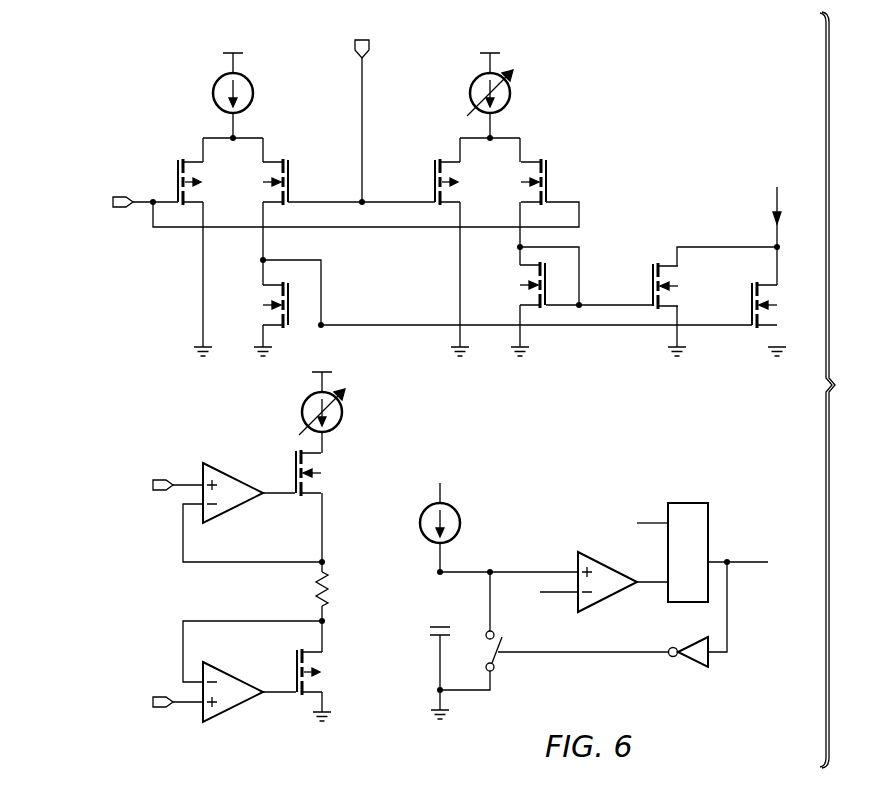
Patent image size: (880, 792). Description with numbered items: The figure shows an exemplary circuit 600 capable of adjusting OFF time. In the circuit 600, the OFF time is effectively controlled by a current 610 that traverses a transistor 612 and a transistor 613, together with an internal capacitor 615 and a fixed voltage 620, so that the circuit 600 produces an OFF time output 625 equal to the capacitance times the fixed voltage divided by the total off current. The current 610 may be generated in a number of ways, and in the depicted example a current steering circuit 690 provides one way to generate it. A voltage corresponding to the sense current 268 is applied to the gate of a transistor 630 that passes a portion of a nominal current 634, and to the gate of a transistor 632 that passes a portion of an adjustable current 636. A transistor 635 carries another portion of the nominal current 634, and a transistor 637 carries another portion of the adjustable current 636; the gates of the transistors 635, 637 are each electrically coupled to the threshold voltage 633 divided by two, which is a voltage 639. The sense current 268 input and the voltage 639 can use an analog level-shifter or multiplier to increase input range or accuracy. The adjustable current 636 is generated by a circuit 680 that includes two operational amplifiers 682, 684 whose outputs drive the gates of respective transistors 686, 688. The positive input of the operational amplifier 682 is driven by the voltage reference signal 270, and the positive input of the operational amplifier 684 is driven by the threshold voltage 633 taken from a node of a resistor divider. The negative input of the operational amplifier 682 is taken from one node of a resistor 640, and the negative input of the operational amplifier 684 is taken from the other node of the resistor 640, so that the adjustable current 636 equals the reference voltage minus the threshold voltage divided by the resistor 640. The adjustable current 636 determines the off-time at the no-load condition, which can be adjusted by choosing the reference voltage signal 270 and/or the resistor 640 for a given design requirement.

The circuit 600 is at (692, 68).
The current steering circuit 690 is at (134, 106).
The nominal current 634 is at (213, 92).
The adjustable current 636 is at (470, 94).
The voltage 639 is at (354, 46).
The transistor 630 is at (176, 172).
The transistor 635 is at (290, 174).
The transistor 637 is at (433, 172).
The transistor 632 is at (548, 174).
The sense current 268 is at (117, 208).
The transistor 613 is at (651, 277).
The transistor 612 is at (750, 296).
The current 610 is at (775, 200).
The circuit 680 is at (203, 434).
The voltage reference signal 270 is at (158, 478).
The operational amplifier 682 is at (233, 512).
The transistor 686 is at (293, 463).
The resistor 640 is at (330, 594).
The transistor 688 is at (294, 661).
The operational amplifier 684 is at (233, 712).
The threshold voltage 633 is at (158, 710).
The internal capacitor 615 is at (428, 635).
The fixed voltage 620 is at (558, 594).
The OFF time output 625 is at (748, 560).